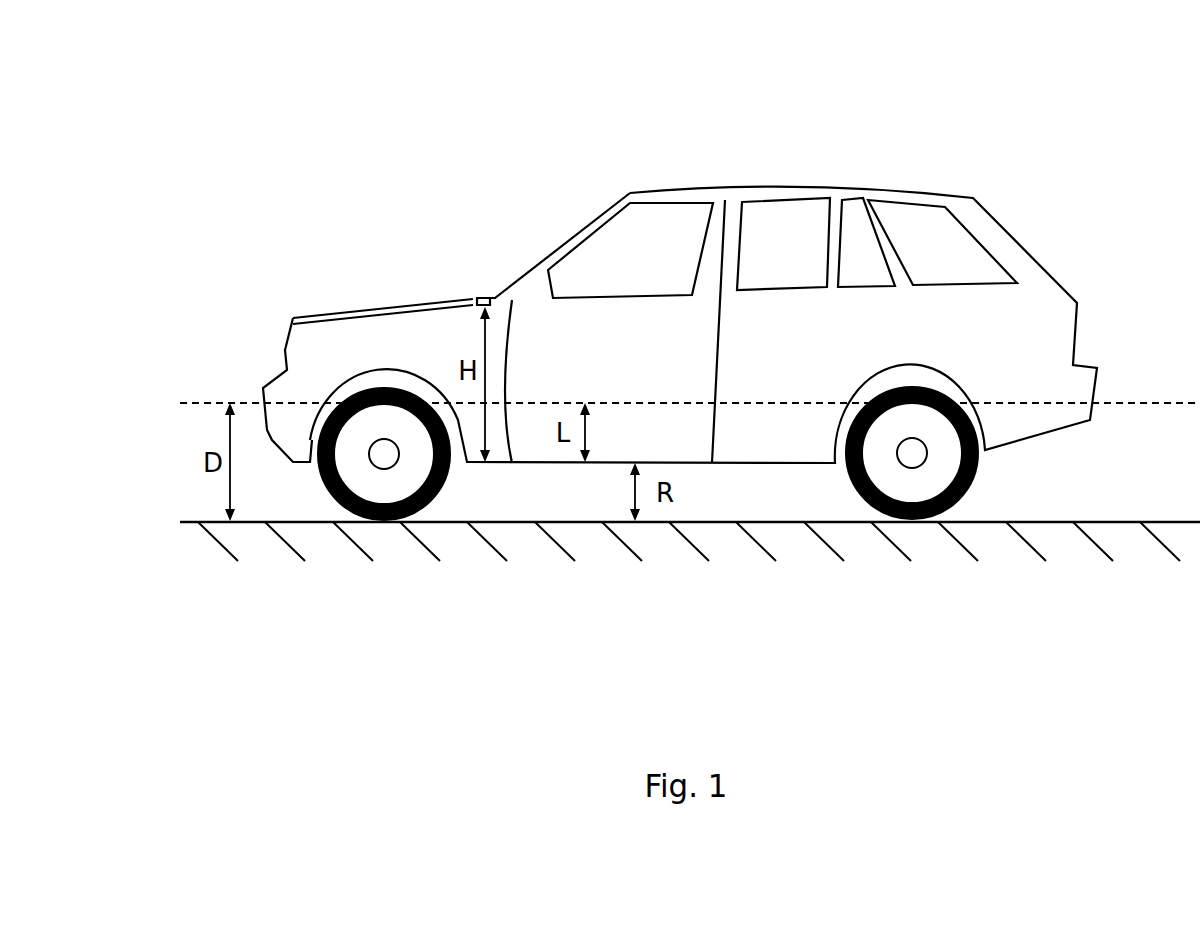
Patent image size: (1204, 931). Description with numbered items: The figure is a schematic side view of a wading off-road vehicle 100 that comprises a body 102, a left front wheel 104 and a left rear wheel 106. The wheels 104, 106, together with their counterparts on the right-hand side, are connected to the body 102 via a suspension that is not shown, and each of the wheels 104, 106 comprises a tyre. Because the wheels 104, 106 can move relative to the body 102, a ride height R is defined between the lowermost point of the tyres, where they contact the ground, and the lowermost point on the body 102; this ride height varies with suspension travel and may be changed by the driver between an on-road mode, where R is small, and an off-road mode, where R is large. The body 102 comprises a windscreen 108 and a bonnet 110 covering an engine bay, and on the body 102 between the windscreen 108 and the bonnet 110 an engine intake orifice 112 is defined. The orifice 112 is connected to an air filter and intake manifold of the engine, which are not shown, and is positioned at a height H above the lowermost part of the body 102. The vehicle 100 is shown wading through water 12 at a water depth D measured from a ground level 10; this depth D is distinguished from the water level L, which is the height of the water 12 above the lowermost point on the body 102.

The ground level 10 is at (237, 523).
The water 12 is at (1185, 400).
The vehicle 100 is at (625, 358).
The body 102 is at (330, 368).
The left front wheel 104 is at (392, 485).
The left rear wheel 106 is at (928, 485).
The windscreen 108 is at (582, 228).
The bonnet 110 is at (368, 310).
The engine intake orifice 112 is at (480, 297).